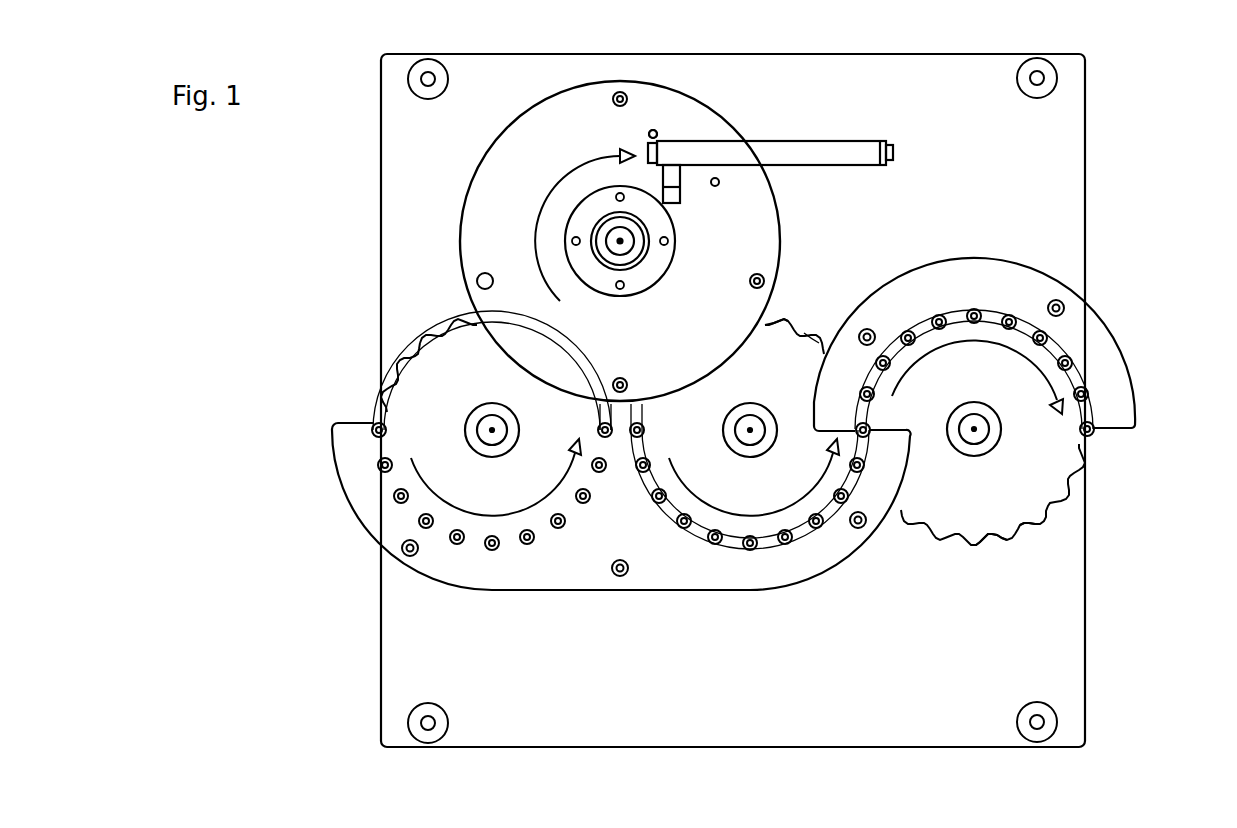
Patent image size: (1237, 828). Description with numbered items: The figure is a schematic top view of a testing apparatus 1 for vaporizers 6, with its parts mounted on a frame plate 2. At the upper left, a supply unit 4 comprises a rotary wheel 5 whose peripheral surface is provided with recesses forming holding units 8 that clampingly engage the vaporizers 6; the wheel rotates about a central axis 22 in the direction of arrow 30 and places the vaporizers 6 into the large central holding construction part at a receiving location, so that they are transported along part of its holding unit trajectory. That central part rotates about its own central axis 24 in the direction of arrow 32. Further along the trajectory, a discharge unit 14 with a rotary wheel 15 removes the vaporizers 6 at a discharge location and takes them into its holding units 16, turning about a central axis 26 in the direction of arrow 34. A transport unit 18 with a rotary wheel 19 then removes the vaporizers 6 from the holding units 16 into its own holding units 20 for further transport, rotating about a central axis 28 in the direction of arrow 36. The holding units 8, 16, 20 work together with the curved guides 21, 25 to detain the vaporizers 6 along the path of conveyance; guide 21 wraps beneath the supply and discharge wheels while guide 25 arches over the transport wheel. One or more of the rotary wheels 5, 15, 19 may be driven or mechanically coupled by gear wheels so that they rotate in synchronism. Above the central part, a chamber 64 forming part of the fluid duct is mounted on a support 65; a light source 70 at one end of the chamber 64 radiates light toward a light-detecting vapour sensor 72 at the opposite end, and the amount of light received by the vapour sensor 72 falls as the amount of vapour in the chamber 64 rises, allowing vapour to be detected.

The testing apparatus 1 is at (1186, 84).
The frame plate 2 is at (392, 152).
The supply unit 4 is at (431, 305).
The rotary wheel 5 is at (450, 355).
The vaporizers 6 is at (378, 424).
The holding units 8 is at (405, 367).
The discharge unit 14 is at (800, 309).
The rotary wheel 15 is at (820, 340).
The holding units 16 is at (822, 340).
The transport unit 18 is at (1047, 546).
The rotary wheel 19 is at (1042, 496).
The holding units 20 is at (1062, 492).
The guide 21 is at (432, 572).
The central axis 22 is at (492, 430).
The central axis 24 is at (621, 241).
The guide 25 is at (1093, 340).
The central axis 26 is at (751, 428).
The central axis 28 is at (976, 430).
The arrow 30 is at (499, 516).
The arrow 32 is at (533, 224).
The arrow 34 is at (746, 516).
The arrow 36 is at (984, 344).
The chamber 64 is at (830, 141).
The support 65 is at (674, 173).
The light source 70 is at (645, 146).
The vapour sensor 72 is at (892, 150).